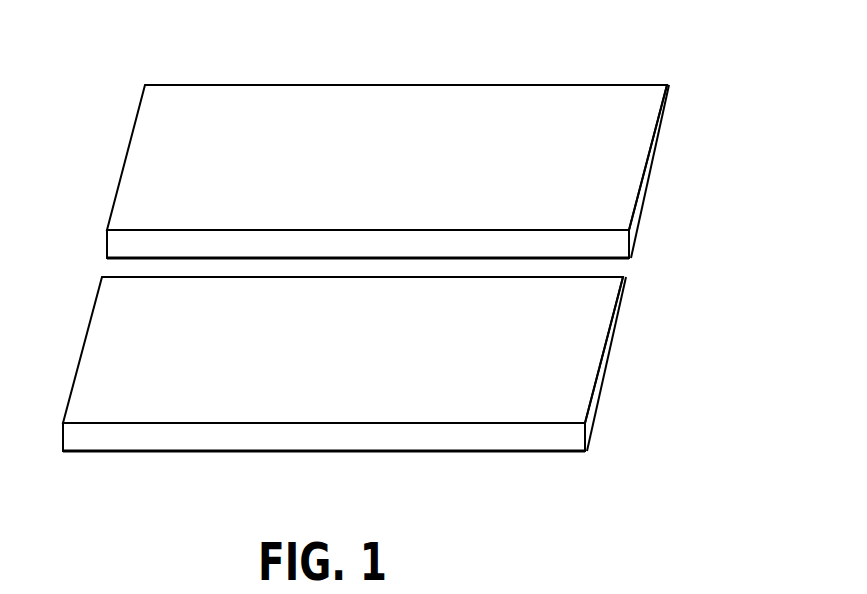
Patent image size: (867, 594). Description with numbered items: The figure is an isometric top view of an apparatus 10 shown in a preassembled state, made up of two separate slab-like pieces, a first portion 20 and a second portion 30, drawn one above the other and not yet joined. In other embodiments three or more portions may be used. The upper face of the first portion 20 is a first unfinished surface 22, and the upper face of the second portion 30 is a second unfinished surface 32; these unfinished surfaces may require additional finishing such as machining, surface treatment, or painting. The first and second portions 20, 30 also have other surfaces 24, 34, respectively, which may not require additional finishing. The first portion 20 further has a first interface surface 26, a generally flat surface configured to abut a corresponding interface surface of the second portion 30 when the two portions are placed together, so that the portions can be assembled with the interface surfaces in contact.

The apparatus 10 is at (86, 58).
The first portion 20 is at (667, 85).
The first unfinished surface 22 is at (369, 169).
The other surfaces 24 is at (648, 175).
The first interface surface 26 is at (369, 257).
The second portion 30 is at (623, 278).
The second unfinished surface 32 is at (369, 362).
The other surfaces 34 is at (605, 373).